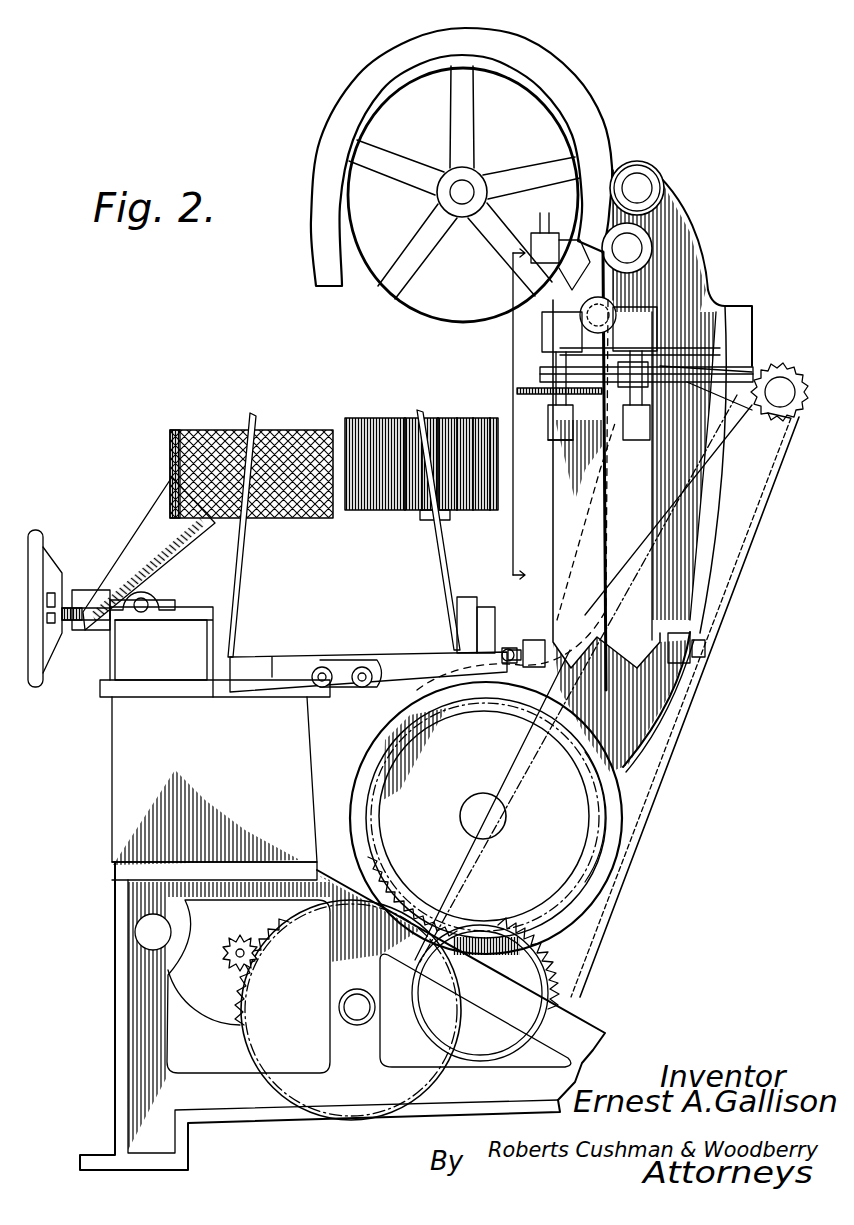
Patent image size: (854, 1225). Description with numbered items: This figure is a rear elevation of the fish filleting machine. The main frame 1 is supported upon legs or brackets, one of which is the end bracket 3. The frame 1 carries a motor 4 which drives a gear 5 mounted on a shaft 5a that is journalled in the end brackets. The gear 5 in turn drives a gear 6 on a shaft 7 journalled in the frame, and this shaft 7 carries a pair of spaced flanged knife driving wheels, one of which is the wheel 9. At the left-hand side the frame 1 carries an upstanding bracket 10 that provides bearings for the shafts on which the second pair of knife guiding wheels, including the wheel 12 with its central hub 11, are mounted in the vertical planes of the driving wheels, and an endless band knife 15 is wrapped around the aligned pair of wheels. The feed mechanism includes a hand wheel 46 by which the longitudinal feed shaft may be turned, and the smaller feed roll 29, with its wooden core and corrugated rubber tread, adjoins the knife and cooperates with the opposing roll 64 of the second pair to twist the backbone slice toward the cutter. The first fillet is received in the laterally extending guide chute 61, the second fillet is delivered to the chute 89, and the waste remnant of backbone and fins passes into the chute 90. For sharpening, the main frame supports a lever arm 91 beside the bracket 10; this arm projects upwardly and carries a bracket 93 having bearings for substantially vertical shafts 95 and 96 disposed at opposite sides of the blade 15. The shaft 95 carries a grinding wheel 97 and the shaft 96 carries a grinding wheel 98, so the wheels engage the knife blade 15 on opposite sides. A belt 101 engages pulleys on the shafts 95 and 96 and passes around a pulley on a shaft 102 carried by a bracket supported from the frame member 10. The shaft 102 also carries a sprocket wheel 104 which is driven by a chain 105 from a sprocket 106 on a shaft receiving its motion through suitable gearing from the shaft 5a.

The main frame 1 is at (120, 818).
The leg or bracket 3 is at (122, 1013).
The motor 4 is at (222, 1003).
The gear 5 is at (268, 1060).
The shaft 5a is at (357, 1025).
The gear 6 is at (421, 902).
The shaft 7 is at (484, 806).
The knife driving wheel 9 is at (620, 810).
The upstanding bracket 10 is at (673, 267).
The upper wheel hub 11 is at (466, 188).
The knife guiding wheel 12 is at (435, 318).
The endless band knife 15 is at (330, 338).
The feed roll 29 is at (298, 510).
The hand wheel 46 is at (45, 690).
The guide chute 61 is at (157, 553).
The second feed roller 64 is at (515, 393).
The chute 89 is at (425, 598).
The chute 90 is at (250, 643).
The lever arm 91 is at (585, 545).
The bracket 93 is at (535, 360).
The shaft 95 is at (556, 345).
The shaft 96 is at (656, 343).
The grinding wheel 97 is at (520, 391).
The grinding wheel 98 is at (707, 318).
The belt 101 is at (690, 370).
The shaft 102 is at (782, 388).
The sprocket wheel 104 is at (776, 422).
The chain 105 is at (771, 497).
The sprocket 106 is at (548, 972).